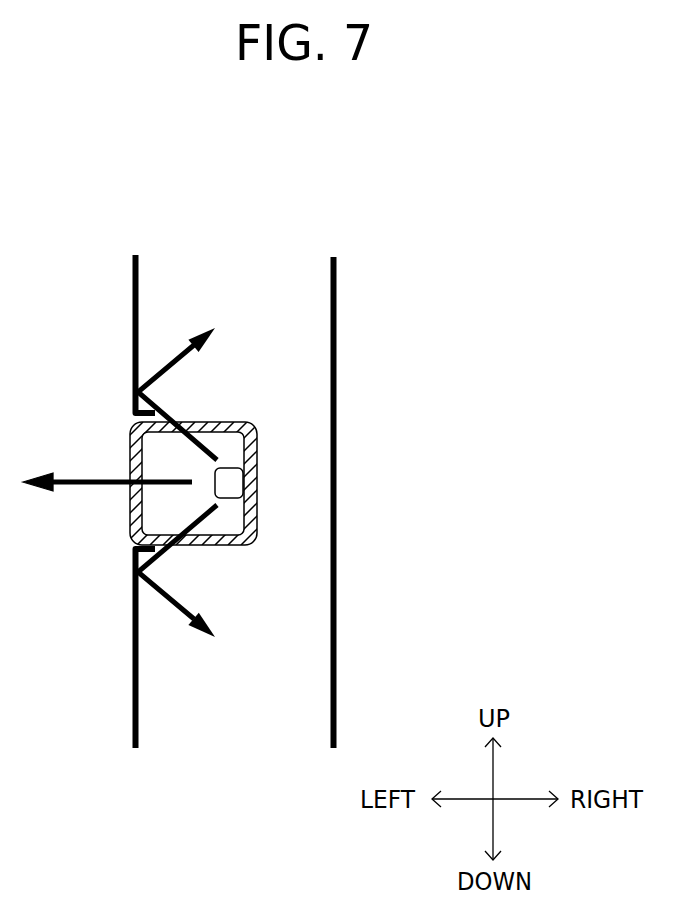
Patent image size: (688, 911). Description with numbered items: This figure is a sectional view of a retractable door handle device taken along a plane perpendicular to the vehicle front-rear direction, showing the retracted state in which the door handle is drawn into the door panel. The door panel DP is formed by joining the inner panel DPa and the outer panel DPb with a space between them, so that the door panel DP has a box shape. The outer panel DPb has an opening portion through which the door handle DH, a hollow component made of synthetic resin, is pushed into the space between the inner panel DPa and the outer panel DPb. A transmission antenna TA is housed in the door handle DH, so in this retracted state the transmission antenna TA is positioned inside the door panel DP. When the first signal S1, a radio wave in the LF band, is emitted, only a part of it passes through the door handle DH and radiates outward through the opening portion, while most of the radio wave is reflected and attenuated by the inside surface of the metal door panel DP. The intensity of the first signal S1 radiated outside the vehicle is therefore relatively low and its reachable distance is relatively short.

The door panel DP is at (236, 481).
The inner panel DPa is at (337, 307).
The outer panel DPb is at (132, 290).
The door handle DH is at (130, 513).
The transmission antenna TA is at (233, 481).
The first signal S1 is at (85, 481).